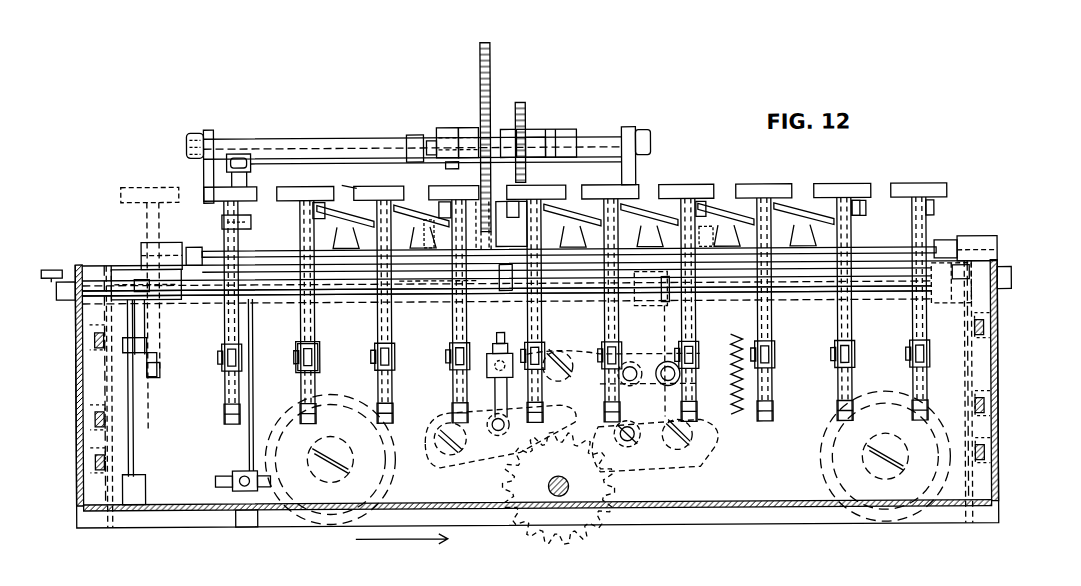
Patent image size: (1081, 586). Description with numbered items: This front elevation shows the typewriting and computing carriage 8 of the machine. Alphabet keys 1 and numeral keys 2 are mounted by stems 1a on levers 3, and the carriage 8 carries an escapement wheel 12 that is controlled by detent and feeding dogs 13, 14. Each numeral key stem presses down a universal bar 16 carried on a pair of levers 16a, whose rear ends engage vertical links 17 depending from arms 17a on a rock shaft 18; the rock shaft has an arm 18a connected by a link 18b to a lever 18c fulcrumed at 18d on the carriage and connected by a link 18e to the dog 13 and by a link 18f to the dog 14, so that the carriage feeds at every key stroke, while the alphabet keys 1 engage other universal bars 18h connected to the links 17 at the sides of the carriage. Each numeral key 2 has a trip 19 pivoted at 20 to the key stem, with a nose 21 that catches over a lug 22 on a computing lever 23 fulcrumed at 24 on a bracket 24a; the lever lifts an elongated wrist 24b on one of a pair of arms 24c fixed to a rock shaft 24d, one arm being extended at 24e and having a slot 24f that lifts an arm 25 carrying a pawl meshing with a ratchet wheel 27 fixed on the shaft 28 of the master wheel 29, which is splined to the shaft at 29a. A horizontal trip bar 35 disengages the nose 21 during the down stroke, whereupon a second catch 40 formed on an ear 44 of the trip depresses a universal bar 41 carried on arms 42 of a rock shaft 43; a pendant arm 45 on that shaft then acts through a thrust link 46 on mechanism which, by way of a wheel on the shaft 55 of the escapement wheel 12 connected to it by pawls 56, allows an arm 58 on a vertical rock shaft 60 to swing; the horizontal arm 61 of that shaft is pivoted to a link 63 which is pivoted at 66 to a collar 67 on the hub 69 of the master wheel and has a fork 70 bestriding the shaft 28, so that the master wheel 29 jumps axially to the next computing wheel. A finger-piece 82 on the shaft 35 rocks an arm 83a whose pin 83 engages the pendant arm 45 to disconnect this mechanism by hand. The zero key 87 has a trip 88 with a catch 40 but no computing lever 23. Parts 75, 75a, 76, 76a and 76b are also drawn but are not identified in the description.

The alphabet keys 1 is at (145, 189).
The stems 1a is at (158, 205).
The numeral keys 2 is at (255, 190).
The levers 3 is at (313, 360).
The carriage 8 is at (78, 482).
The escapement wheel 12 is at (508, 486).
The feeding dog 13 is at (598, 470).
The feeding dog 14 is at (478, 448).
The universal bar 16 is at (608, 458).
The levers 16a is at (98, 340).
The vertical links 17 is at (85, 385).
The arms 17a is at (963, 310).
The rock shaft 18 is at (815, 300).
The arm 18a is at (655, 305).
The link 18b is at (666, 310).
The lever 18c is at (615, 360).
The fulcrum 18d is at (565, 347).
The link 18e is at (668, 390).
The link 18f is at (493, 378).
The universal bars 18h is at (95, 418).
The trip 19 is at (315, 320).
The pivot 20 is at (224, 420).
The nose 21 is at (306, 200).
The lugs 22 is at (250, 224).
The computing levers 23 is at (350, 228).
The fulcrum 24 is at (430, 235).
The brackets 24a is at (716, 232).
The elongated wrists 24b is at (420, 205).
The arms 24c is at (442, 204).
The rock shaft 24d is at (510, 204).
The extension 24e is at (587, 207).
The slot 24f is at (536, 140).
The arm 25 is at (563, 132).
The ratchet wheel 27 is at (524, 110).
The shaft 28 is at (262, 145).
The master wheel 29 is at (490, 78).
The spline 29a is at (440, 132).
The trip bar 35 is at (280, 305).
The catch 40 is at (712, 205).
The universal bar 41 is at (290, 256).
The arms 42 is at (196, 250).
The rock shaft 43 is at (140, 272).
The ear 44 is at (859, 220).
The pendant arm 45 is at (134, 310).
The thrust link 46 is at (134, 462).
The shaft 55 is at (548, 488).
The pawls 56 is at (663, 436).
The arm 58 is at (234, 474).
The vertical rock shaft 60 is at (253, 380).
The horizontal arm 61 is at (228, 163).
The link 63 is at (347, 178).
The pivot 66 is at (455, 171).
The collar 67 is at (450, 130).
The hub 69 is at (472, 130).
The fork 70 is at (410, 140).
The hook 75 is at (512, 300).
The bar 75a is at (420, 300).
The block 76 is at (497, 225).
The block 76a is at (150, 343).
The block 76b is at (152, 378).
The finger-piece 82 is at (48, 280).
The pin 83 is at (160, 290).
The arm 83a is at (122, 278).
The key 87 is at (930, 186).
The trip 88 is at (915, 300).